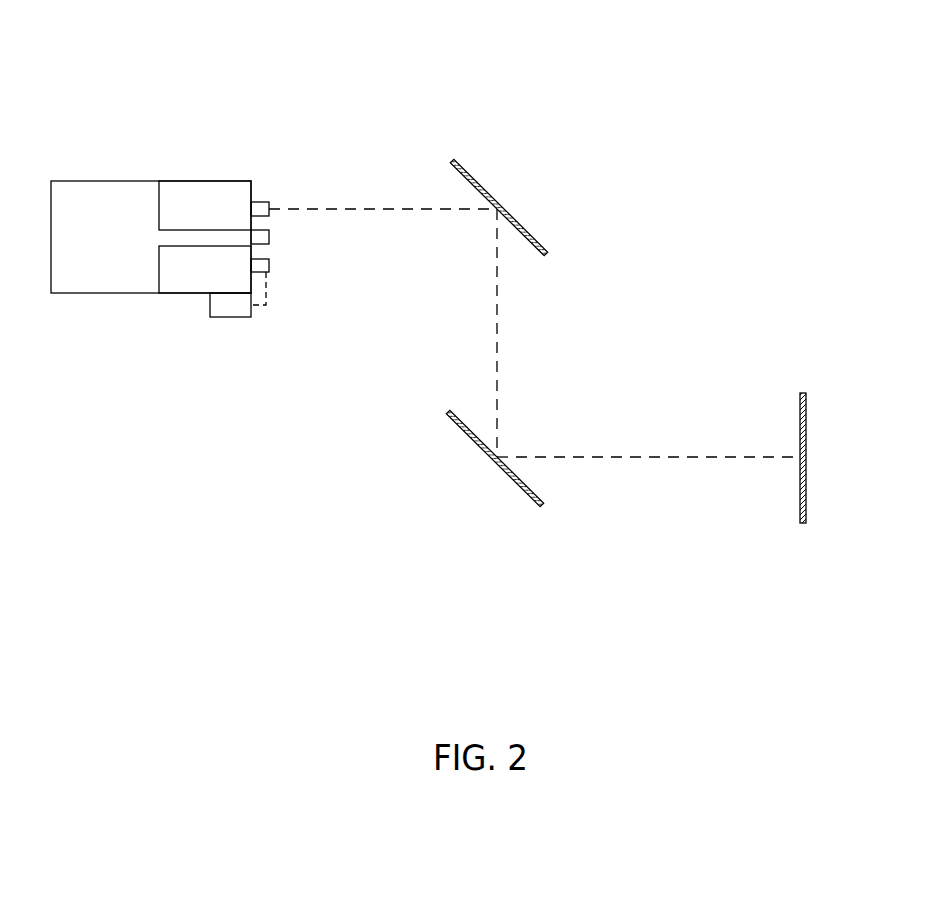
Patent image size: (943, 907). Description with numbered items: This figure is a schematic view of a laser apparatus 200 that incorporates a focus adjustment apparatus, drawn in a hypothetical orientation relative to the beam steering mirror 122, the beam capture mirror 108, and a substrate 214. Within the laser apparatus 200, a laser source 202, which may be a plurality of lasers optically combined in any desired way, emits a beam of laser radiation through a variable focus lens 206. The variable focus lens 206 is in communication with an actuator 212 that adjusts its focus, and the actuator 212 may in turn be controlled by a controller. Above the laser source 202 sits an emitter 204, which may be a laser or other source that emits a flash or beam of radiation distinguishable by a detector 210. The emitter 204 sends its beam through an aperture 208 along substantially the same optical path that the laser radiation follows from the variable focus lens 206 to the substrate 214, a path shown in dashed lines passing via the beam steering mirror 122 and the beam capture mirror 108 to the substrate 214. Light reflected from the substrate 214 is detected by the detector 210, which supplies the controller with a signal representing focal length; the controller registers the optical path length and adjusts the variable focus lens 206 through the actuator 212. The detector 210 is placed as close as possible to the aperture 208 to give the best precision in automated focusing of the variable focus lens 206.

The laser apparatus 200 is at (256, 112).
The laser source 202 is at (224, 277).
The emitter 204 is at (224, 212).
The variable focus lens 206 is at (270, 263).
The aperture 208 is at (270, 199).
The detector 210 is at (270, 236).
The actuator 212 is at (226, 317).
The beam steering mirror 122 is at (515, 218).
The beam capture mirror 108 is at (518, 485).
The substrate 214 is at (800, 411).